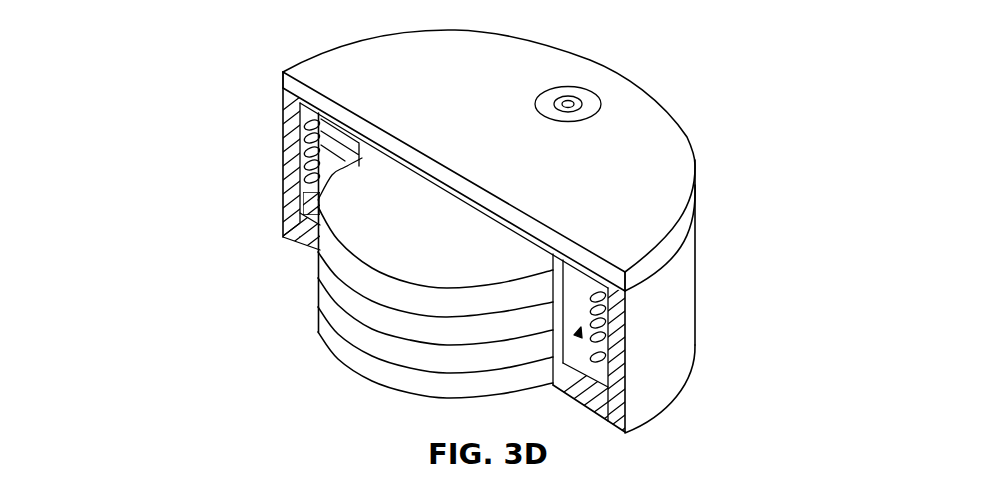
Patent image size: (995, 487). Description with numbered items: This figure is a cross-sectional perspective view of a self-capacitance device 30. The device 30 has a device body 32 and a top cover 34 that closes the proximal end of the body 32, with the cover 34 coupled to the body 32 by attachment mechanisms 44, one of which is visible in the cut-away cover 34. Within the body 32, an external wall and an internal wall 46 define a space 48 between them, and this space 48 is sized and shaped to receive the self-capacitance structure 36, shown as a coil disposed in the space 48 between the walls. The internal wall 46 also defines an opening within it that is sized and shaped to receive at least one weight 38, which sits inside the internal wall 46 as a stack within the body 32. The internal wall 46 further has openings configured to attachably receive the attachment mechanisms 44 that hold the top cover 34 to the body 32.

The self-capacitance device 30 is at (87, 84).
The device body 32 is at (660, 330).
The top cover 34 is at (627, 137).
The self-capacitance structure 36 is at (300, 182).
The weight 38 is at (417, 230).
The attachment mechanism 44 is at (587, 88).
The internal wall 46 is at (596, 280).
The space 48 is at (578, 332).